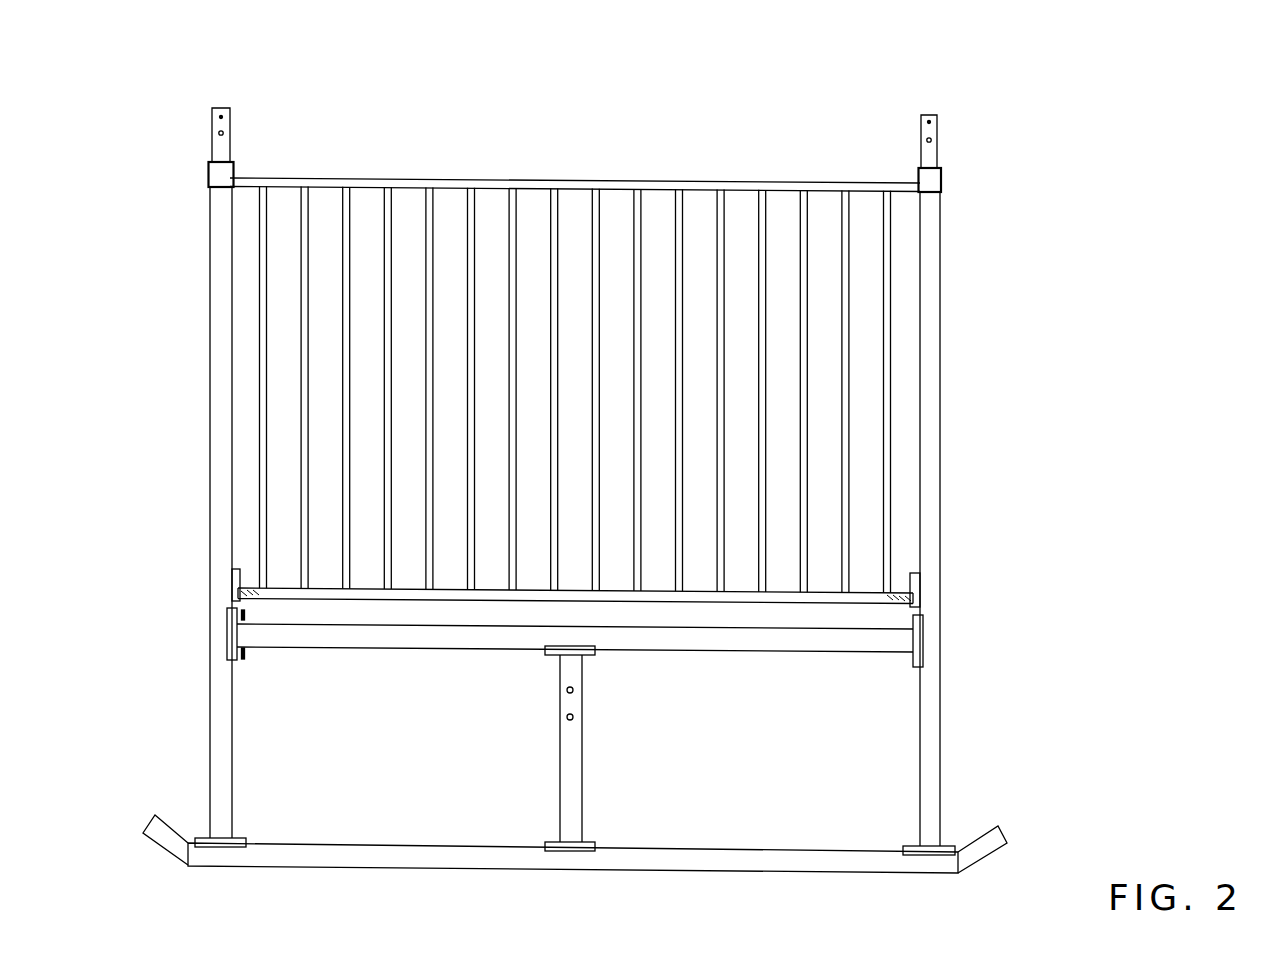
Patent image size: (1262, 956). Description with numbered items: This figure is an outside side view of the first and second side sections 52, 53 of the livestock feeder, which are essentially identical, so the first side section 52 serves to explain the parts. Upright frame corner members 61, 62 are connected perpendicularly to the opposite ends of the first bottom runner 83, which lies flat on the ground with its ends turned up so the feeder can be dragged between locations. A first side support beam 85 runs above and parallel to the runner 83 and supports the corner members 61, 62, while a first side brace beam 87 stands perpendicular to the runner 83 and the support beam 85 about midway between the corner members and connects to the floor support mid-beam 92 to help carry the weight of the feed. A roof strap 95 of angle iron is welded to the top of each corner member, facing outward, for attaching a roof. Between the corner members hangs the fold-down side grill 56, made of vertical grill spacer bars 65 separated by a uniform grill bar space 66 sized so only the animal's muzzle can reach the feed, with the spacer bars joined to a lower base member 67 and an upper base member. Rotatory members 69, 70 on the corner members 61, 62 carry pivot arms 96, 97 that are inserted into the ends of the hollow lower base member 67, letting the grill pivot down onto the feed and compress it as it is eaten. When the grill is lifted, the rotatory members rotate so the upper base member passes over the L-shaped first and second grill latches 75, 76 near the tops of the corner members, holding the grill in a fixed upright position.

The first side section 52 is at (575, 402).
The second side section 53 is at (575, 402).
The fold-down side grill 56 is at (680, 164).
The frame corner member 61 is at (218, 304).
The frame corner member 62 is at (930, 266).
The grill spacer bars 65 is at (352, 226).
The grill bar space 66 is at (476, 226).
The lower grill base member 67 is at (823, 598).
The rotatory member 69 is at (234, 577).
The rotatory member 70 is at (923, 584).
The first grill latch 75 is at (201, 181).
The second grill latch 76 is at (946, 187).
The first bottom runner 83 is at (747, 861).
The first side support beam 85 is at (281, 637).
The first side brace beam 87 is at (588, 782).
The floor support mid-beam 92 is at (587, 700).
The roof strap 95 is at (218, 143).
The pivot arm 96 is at (251, 607).
The pivot arm 97 is at (898, 613).